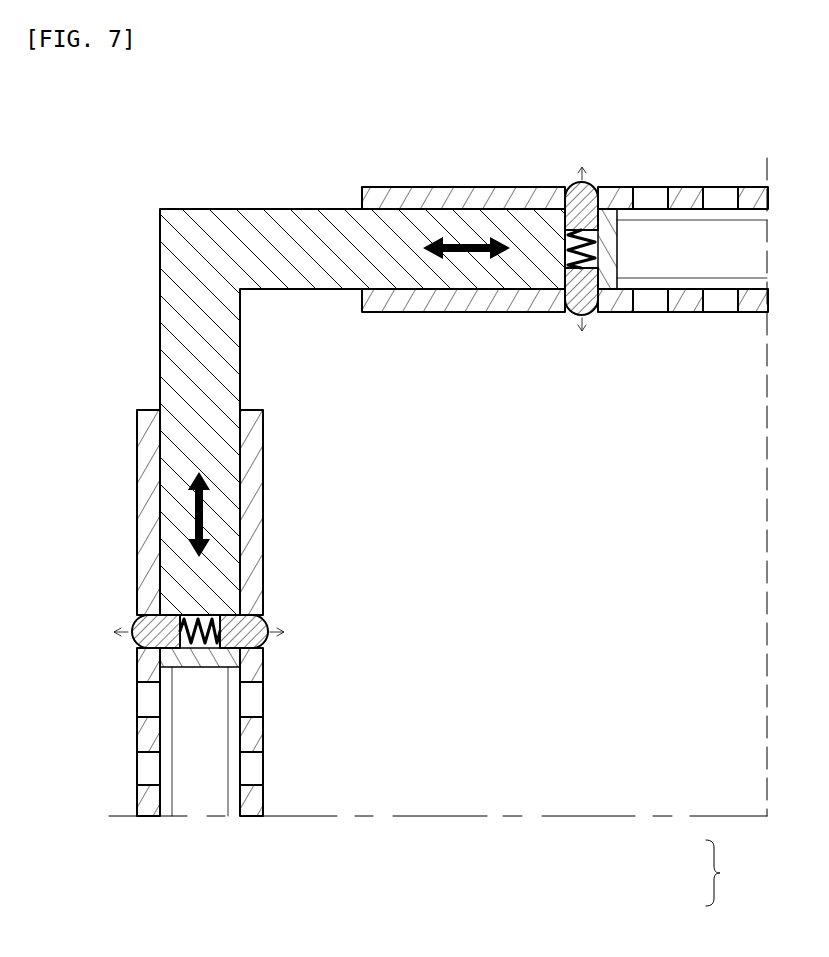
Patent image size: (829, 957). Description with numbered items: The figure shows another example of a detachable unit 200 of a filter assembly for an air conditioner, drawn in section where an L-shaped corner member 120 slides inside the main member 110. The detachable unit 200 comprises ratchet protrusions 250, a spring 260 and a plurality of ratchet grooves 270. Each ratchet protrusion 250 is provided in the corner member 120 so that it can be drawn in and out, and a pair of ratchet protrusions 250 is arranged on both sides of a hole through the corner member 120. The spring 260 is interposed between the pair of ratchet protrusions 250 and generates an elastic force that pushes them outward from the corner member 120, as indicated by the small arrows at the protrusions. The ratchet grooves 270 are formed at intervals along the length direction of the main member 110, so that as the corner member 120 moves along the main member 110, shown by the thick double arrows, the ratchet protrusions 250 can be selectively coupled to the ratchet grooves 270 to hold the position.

The main member 110 is at (473, 152).
The corner member 120 is at (202, 170).
The detachable unit 200 is at (736, 873).
The ratchet protrusion 250 is at (569, 182).
The spring 260 is at (566, 247).
The ratchet grooves 270 is at (648, 186).